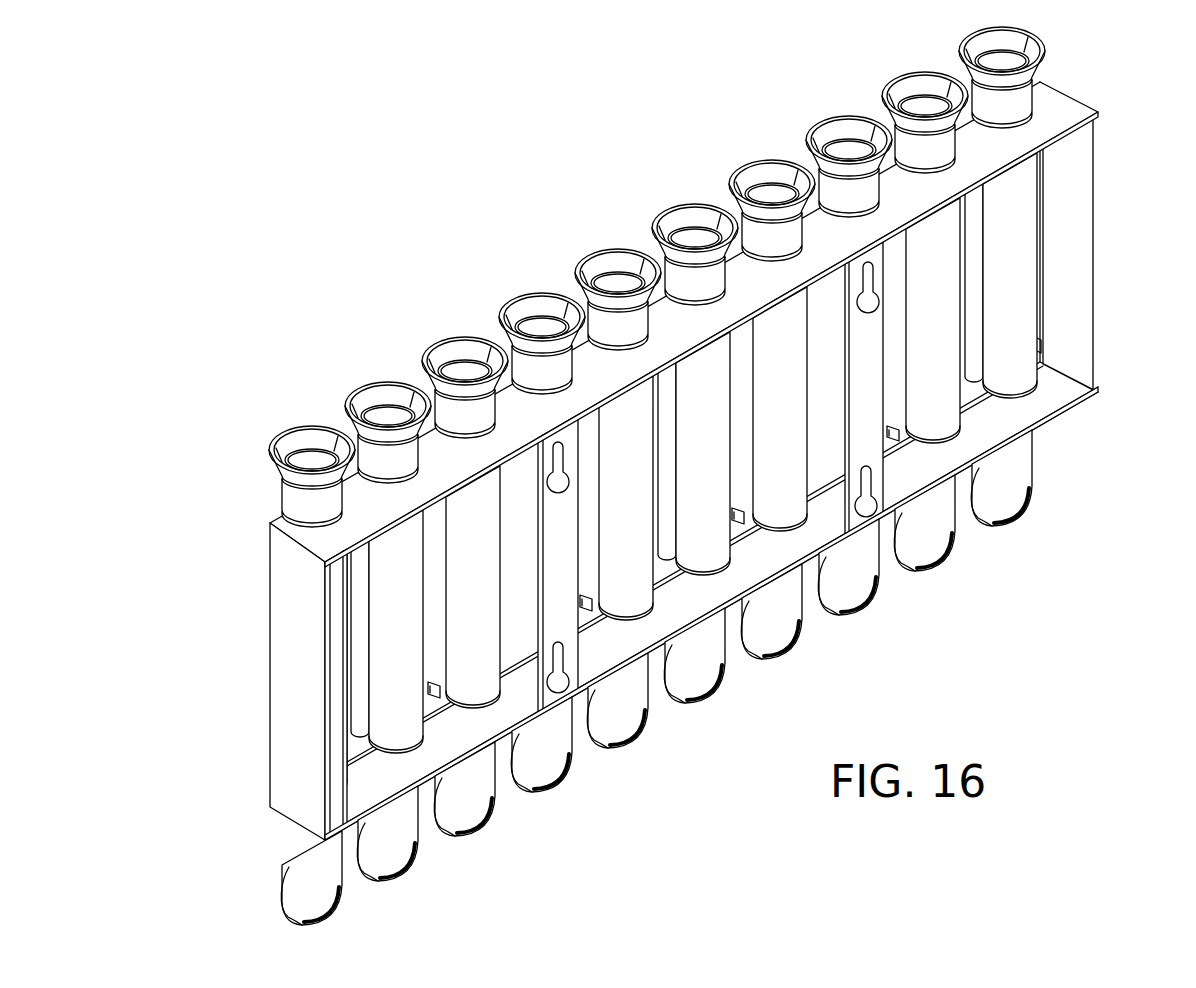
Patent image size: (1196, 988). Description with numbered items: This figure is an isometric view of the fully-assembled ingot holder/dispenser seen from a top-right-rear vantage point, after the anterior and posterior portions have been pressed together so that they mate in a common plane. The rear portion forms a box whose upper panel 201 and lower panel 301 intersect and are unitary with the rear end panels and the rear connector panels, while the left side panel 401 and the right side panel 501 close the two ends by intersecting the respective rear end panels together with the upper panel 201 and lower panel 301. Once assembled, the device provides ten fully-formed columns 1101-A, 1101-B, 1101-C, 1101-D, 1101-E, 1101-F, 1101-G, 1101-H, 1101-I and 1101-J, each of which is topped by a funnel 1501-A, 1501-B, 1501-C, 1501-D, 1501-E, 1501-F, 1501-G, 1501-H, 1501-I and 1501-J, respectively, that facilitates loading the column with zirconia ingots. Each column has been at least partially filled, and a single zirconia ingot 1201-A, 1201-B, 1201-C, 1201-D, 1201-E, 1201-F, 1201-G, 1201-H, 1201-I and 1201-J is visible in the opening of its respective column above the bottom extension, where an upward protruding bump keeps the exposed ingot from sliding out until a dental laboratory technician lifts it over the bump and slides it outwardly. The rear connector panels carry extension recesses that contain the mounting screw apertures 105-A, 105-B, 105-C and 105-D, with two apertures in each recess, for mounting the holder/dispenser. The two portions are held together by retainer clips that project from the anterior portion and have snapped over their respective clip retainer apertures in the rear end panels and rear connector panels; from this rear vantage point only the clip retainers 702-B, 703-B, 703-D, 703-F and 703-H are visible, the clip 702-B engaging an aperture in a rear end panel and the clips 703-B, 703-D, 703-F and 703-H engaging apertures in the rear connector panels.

The upper panel 201 is at (1062, 107).
The lower panel 301 is at (1057, 400).
The left side panel 401 is at (1078, 254).
The right side panel 501 is at (295, 680).
The clip 702-B is at (1042, 345).
The clip 703-B is at (897, 432).
The clip 703-D is at (750, 522).
The clip 703-F is at (603, 610).
The clip 703-H is at (445, 697).
The mounting screw aperture 105-A is at (880, 274).
The mounting screw aperture 105-B is at (876, 473).
The mounting screw aperture 105-C is at (552, 459).
The mounting screw aperture 105-D is at (570, 655).
The column 1101-A is at (972, 85).
The column 1101-B is at (895, 130).
The column 1101-C is at (819, 174).
The column 1101-D is at (742, 218).
The column 1101-E is at (665, 262).
The column 1101-F is at (588, 307).
The column 1101-G is at (512, 351).
The column 1101-H is at (435, 395).
The column 1101-I is at (358, 440).
The column 1101-J is at (282, 484).
The zirconia ingot 1201-A is at (1013, 510).
The zirconia ingot 1201-B is at (936, 555).
The zirconia ingot 1201-C is at (860, 599).
The zirconia ingot 1201-D is at (783, 643).
The zirconia ingot 1201-E is at (706, 687).
The zirconia ingot 1201-F is at (629, 732).
The zirconia ingot 1201-G is at (553, 776).
The zirconia ingot 1201-H is at (476, 820).
The zirconia ingot 1201-I is at (399, 865).
The zirconia ingot 1201-J is at (327, 905).
The funnel 1501-A is at (975, 45).
The funnel 1501-B is at (898, 90).
The funnel 1501-C is at (822, 134).
The funnel 1501-D is at (745, 178).
The funnel 1501-E is at (668, 222).
The funnel 1501-F is at (591, 267).
The funnel 1501-G is at (515, 311).
The funnel 1501-H is at (438, 355).
The funnel 1501-I is at (361, 400).
The funnel 1501-J is at (285, 444).